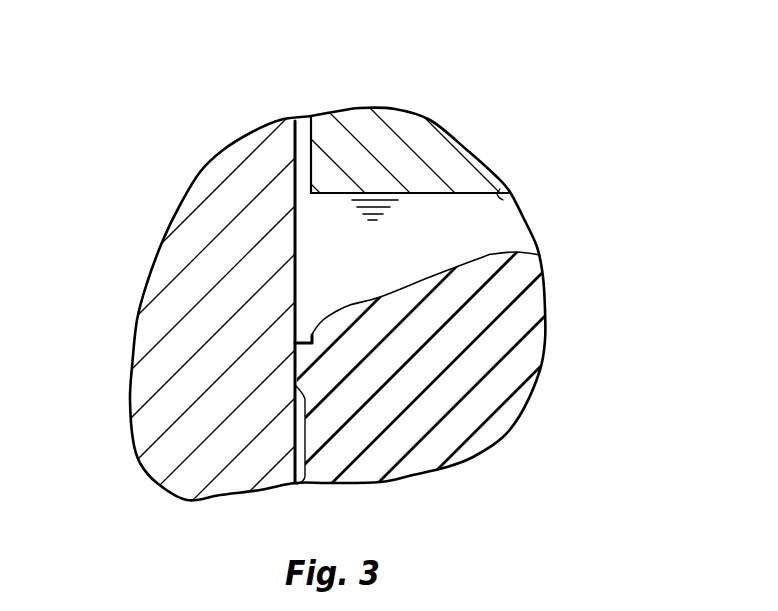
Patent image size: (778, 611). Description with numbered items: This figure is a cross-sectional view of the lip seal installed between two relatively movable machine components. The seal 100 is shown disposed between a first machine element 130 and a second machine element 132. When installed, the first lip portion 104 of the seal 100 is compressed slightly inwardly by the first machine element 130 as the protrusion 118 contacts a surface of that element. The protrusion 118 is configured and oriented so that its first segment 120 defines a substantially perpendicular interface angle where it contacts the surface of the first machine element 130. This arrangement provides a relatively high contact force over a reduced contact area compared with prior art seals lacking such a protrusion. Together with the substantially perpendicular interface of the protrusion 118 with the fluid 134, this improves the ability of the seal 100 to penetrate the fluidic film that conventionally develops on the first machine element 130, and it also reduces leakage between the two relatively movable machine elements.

The seal 100 is at (467, 310).
The first lip portion 104 is at (485, 257).
The protrusion 118 is at (293, 357).
The first segment 120 is at (307, 338).
The first machine element 130 is at (306, 124).
The second machine element 132 is at (503, 200).
The fluid 134 is at (457, 235).